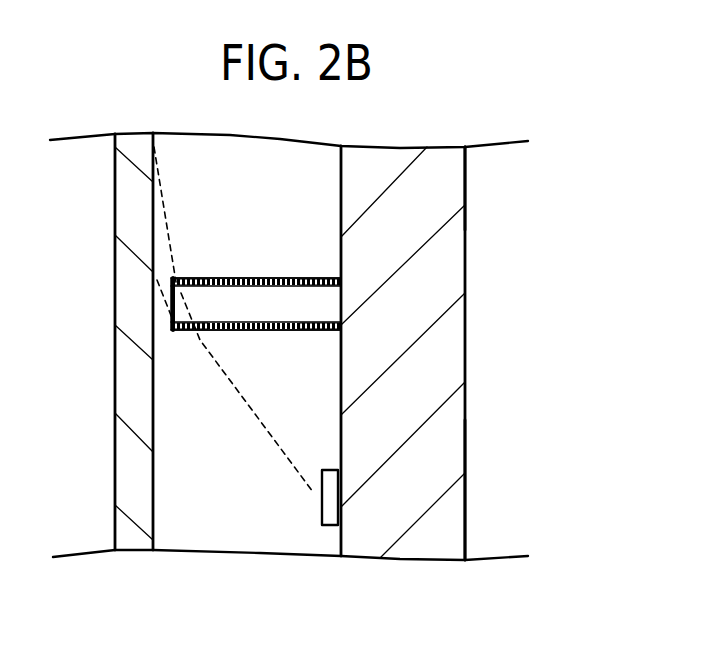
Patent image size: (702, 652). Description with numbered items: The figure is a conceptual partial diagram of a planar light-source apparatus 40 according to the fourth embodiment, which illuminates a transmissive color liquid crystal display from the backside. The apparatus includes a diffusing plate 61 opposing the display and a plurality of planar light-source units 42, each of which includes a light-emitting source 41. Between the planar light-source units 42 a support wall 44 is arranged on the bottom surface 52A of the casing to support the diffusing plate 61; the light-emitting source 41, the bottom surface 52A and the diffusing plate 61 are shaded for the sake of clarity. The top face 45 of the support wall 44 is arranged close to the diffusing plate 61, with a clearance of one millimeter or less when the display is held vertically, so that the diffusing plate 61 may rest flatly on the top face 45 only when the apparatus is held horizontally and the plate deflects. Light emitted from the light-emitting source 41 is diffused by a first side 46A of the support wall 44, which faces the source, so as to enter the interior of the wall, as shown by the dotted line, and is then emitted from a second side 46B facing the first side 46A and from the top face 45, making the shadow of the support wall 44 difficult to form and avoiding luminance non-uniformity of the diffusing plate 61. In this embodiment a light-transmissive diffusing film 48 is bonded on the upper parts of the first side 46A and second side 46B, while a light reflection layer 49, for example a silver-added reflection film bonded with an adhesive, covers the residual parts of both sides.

The bottom surface of the casing 52A is at (413, 162).
The planar light-source unit 42 is at (499, 193).
The planar light-source apparatus 40 is at (490, 310).
The diffusing plate 61 is at (128, 357).
The second side of the support wall 46B is at (238, 278).
The first side of the support wall 46A is at (258, 331).
The light-transmissive diffusing film 48 is at (205, 278).
The light reflection layer 49 is at (316, 278).
The support wall 44 is at (277, 292).
The top face of the support wall 45 is at (171, 323).
The light-emitting source 41 is at (324, 508).